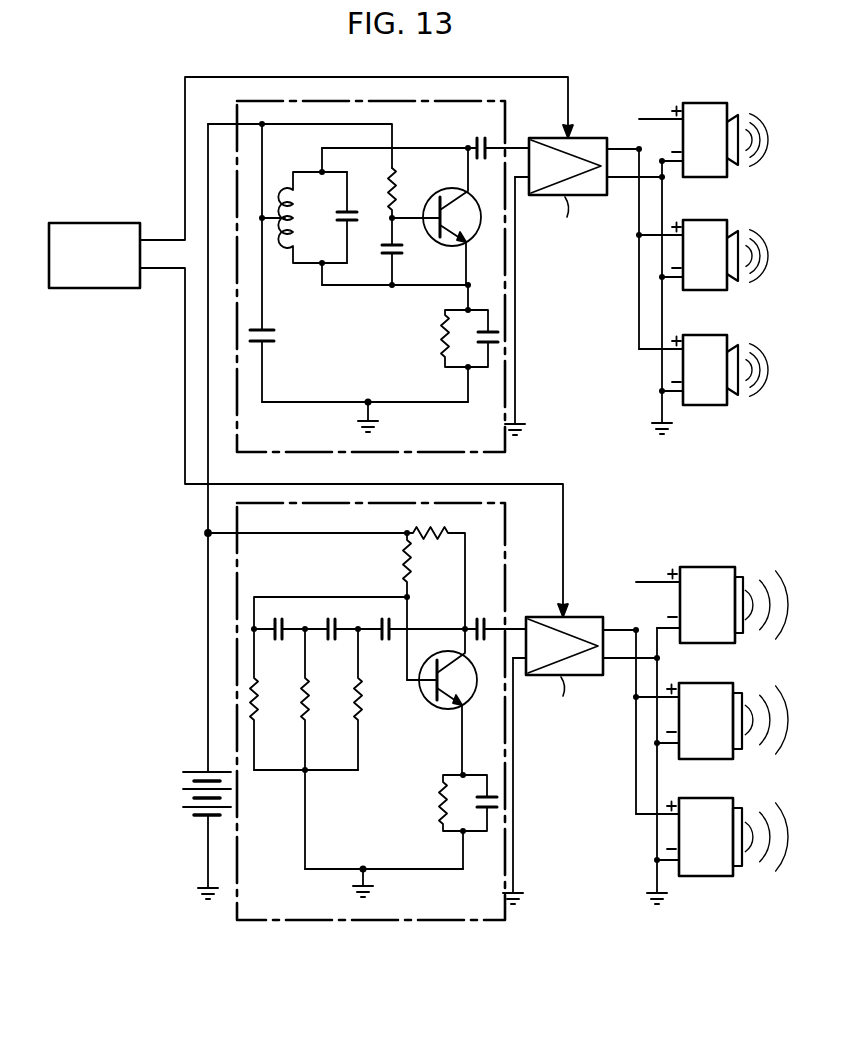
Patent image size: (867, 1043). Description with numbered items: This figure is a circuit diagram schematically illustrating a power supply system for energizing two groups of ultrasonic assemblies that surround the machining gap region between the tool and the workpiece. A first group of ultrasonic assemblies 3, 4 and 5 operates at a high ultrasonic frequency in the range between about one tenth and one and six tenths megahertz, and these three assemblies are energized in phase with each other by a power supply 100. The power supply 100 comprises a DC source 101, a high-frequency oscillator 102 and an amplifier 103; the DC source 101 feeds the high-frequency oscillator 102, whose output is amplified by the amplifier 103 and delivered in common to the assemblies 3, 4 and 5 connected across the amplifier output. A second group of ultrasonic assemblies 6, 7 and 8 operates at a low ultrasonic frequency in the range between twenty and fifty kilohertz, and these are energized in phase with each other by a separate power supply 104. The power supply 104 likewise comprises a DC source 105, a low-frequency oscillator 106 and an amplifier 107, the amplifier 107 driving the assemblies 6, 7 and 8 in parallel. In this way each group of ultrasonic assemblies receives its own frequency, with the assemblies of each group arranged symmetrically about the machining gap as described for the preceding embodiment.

The ultrasonic assembly 3 is at (704, 103).
The ultrasonic assembly 4 is at (714, 221).
The ultrasonic assembly 5 is at (714, 335).
The ultrasonic assembly 6 is at (717, 567).
The ultrasonic assembly 7 is at (714, 683).
The ultrasonic assembly 8 is at (713, 798).
The power supply 100 is at (581, 302).
The DC source 101 is at (84, 289).
The high-frequency oscillator 102 is at (236, 314).
The amplifier 103 is at (589, 137).
The power supply 104 is at (582, 768).
The DC source 105 is at (182, 791).
The low-frequency oscillator 106 is at (234, 636).
The amplifier 107 is at (589, 616).